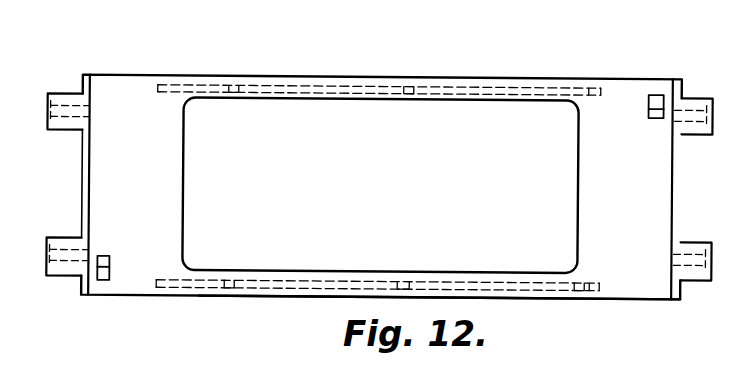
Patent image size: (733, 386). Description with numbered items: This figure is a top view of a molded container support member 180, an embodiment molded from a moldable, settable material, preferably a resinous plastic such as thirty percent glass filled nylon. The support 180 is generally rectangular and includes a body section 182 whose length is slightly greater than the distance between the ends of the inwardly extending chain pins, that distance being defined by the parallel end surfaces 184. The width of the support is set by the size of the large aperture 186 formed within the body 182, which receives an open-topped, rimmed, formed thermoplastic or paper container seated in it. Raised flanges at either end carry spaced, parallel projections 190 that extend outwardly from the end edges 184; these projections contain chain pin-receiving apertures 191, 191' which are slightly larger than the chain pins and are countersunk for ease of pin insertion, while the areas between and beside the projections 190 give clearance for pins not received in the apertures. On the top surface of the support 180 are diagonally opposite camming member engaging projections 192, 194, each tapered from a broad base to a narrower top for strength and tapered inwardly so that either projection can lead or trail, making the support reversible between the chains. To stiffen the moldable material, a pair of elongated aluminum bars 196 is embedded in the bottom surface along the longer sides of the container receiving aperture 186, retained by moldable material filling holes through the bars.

The container support member 180 is at (542, 70).
The body section 182 is at (637, 278).
The parallel end surfaces 184 is at (73, 178).
The aperture 186 is at (378, 104).
The spaced, parallel projections 190 is at (63, 131).
The chain pin-receiving apertures 191 is at (378, 188).
The chain pin-receiving aperture 191' is at (699, 243).
The camming member engaging projection 192 is at (656, 100).
The camming member engaging projection 194 is at (110, 271).
The elongated aluminum bars 196 is at (427, 87).